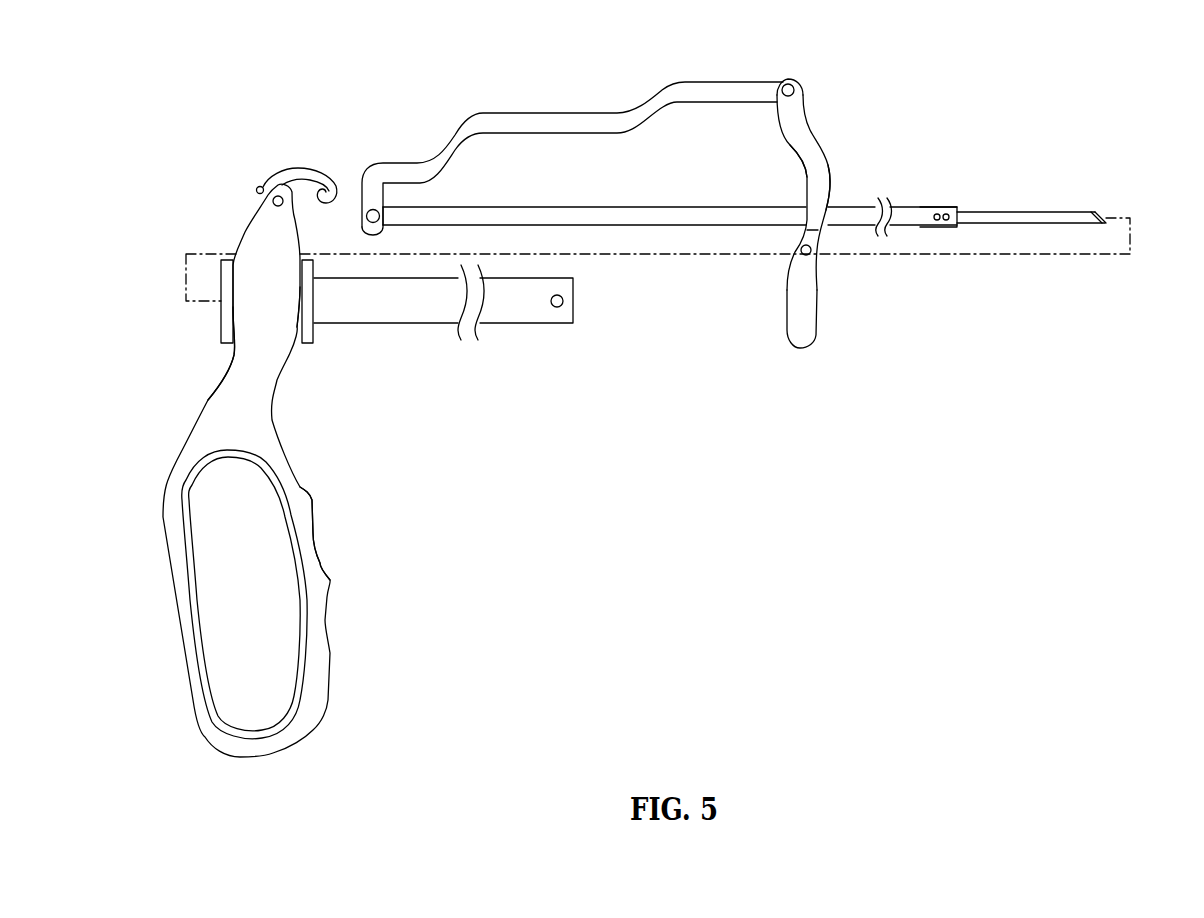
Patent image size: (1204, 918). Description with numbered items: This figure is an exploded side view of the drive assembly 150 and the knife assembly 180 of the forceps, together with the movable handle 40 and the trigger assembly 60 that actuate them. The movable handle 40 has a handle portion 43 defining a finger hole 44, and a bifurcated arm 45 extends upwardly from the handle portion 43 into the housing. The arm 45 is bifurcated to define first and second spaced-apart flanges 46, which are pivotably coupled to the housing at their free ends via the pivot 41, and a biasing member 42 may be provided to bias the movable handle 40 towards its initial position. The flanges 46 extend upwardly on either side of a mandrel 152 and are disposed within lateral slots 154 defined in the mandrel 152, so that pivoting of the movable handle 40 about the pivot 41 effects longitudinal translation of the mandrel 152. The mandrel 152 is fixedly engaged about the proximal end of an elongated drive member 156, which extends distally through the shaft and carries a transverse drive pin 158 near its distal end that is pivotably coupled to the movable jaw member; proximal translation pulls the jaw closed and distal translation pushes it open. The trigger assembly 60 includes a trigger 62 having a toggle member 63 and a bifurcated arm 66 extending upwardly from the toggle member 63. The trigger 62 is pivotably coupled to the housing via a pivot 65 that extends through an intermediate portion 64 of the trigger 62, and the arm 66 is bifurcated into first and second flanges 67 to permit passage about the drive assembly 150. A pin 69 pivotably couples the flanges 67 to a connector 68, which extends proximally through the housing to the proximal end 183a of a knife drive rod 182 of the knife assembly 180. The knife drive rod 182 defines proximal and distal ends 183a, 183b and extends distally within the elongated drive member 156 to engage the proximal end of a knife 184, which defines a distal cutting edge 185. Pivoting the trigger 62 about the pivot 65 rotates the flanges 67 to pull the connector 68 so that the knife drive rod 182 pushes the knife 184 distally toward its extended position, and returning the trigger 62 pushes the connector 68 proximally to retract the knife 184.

The movable handle 40 is at (368, 510).
The pivot 41 is at (275, 197).
The biasing member 42 is at (296, 175).
The handle portion 43 is at (332, 580).
The finger hole 44 is at (267, 650).
The bifurcated arm 45 is at (250, 358).
The flanges 46 is at (252, 291).
The trigger assembly 60 is at (833, 105).
The trigger 62 is at (805, 277).
The toggle member 63 is at (807, 310).
The intermediate portion 64 is at (810, 230).
The pivot 65 is at (801, 252).
The bifurcated arm 66 is at (813, 162).
The flanges 67 is at (822, 173).
The connector 68 is at (567, 122).
The pin 69 is at (786, 84).
The drive assembly 150 is at (478, 358).
The mandrel 152 is at (310, 330).
The lateral slots 154 is at (300, 350).
The elongated drive member 156 is at (500, 313).
The transverse drive pin 158 is at (563, 300).
The knife assembly 180 is at (896, 176).
The knife drive rod 182 is at (587, 217).
The proximal end 183a is at (410, 217).
The distal end 183b is at (922, 218).
The knife 184 is at (1023, 218).
The distal cutting edge 185 is at (1105, 211).